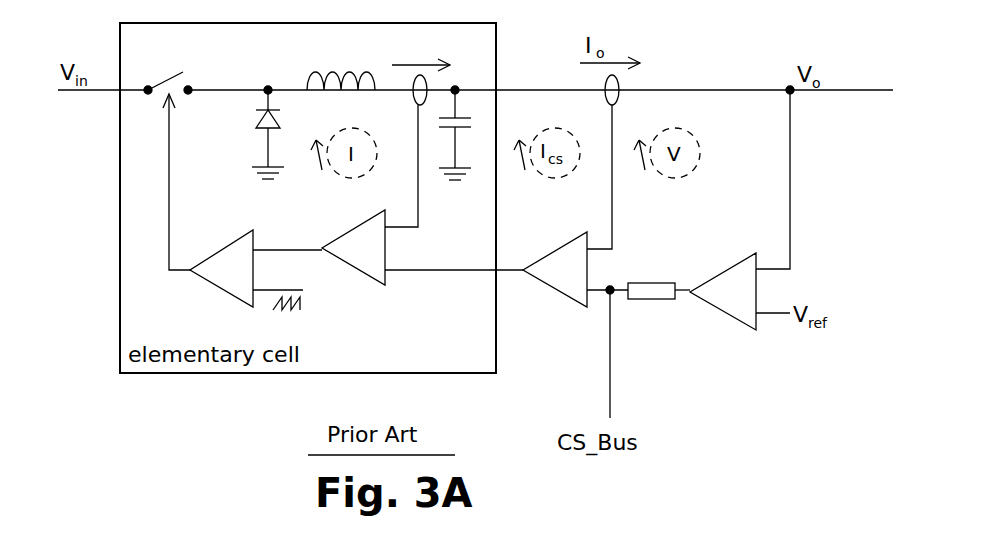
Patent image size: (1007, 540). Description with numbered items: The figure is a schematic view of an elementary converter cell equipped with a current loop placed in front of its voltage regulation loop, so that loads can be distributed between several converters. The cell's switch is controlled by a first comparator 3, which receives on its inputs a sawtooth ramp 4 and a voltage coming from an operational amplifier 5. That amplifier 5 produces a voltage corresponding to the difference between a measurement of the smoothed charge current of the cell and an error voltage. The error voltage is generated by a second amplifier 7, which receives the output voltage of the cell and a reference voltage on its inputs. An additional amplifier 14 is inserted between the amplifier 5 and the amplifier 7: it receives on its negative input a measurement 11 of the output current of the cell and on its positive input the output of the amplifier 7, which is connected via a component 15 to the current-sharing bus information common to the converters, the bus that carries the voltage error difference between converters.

The first comparator 3 is at (222, 260).
The sawtooth ramp 4 is at (298, 316).
The operational amplifier 5 is at (361, 265).
The second amplifier 7 is at (730, 268).
The measurement of the output current 11 is at (616, 103).
The amplifier 14 is at (558, 288).
The component 15 is at (652, 291).